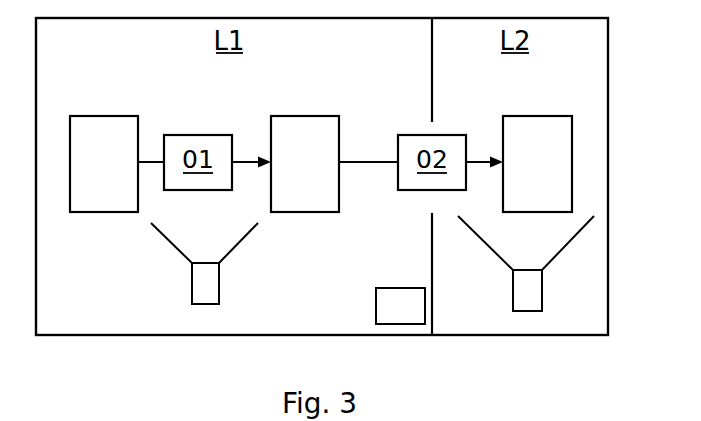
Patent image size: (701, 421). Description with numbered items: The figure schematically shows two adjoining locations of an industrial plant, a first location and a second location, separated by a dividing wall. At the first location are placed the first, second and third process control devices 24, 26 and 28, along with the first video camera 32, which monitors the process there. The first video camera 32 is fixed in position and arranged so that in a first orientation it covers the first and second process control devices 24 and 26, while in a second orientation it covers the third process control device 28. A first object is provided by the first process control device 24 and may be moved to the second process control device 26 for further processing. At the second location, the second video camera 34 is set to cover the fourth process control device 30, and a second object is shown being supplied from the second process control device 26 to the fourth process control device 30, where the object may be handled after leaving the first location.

The first process control device 24 is at (104, 164).
The second process control device 26 is at (305, 164).
The third process control device 28 is at (400, 306).
The fourth process control device 30 is at (537, 164).
The first video camera 32 is at (192, 288).
The second video camera 34 is at (513, 296).